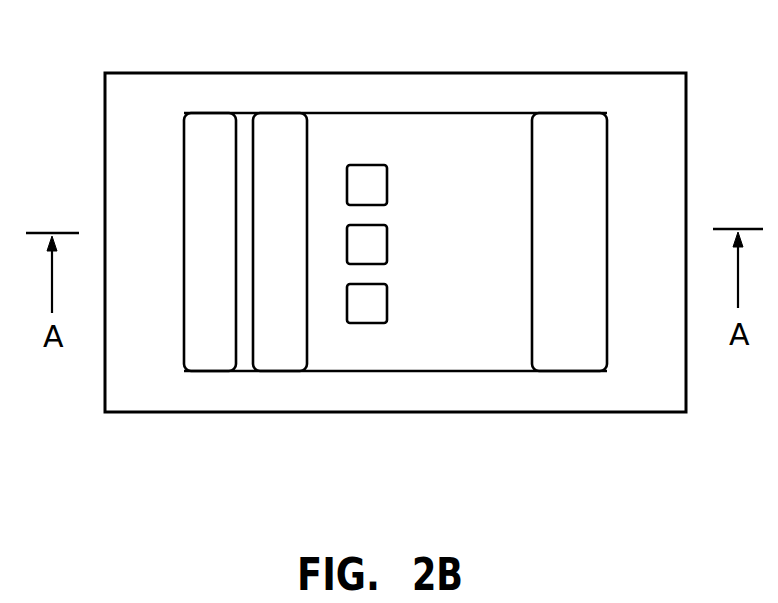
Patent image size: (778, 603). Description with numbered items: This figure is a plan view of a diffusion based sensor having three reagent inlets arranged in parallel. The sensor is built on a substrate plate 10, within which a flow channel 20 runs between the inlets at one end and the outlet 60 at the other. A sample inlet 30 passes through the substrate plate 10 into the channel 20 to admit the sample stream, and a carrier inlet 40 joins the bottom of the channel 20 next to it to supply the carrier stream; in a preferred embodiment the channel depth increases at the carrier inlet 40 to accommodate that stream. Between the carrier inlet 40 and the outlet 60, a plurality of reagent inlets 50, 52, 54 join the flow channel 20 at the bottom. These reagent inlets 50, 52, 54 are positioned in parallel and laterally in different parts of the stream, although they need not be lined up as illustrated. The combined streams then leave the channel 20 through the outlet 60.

The substrate plate 10 is at (575, 72).
The channel 20 is at (438, 113).
The sample inlet 30 is at (228, 252).
The carrier inlet 40 is at (300, 252).
The reagent inlet 50 is at (388, 253).
The reagent inlet 52 is at (388, 193).
The reagent inlet 54 is at (388, 315).
The outlet 60 is at (581, 250).